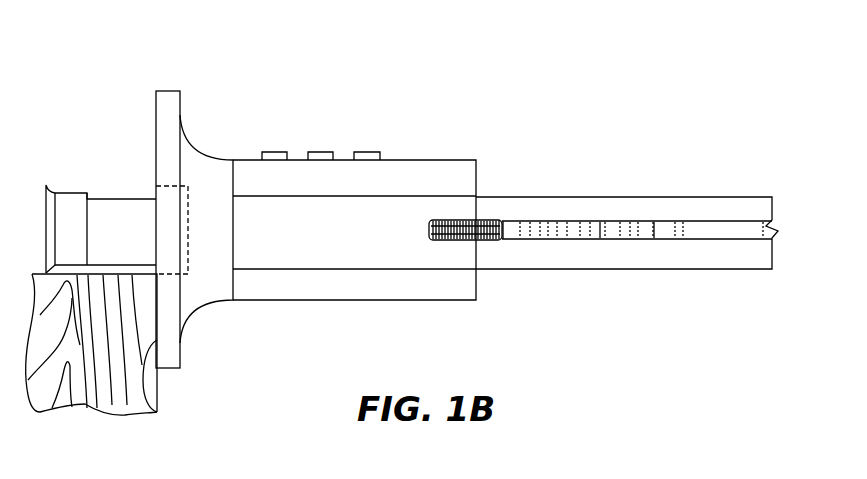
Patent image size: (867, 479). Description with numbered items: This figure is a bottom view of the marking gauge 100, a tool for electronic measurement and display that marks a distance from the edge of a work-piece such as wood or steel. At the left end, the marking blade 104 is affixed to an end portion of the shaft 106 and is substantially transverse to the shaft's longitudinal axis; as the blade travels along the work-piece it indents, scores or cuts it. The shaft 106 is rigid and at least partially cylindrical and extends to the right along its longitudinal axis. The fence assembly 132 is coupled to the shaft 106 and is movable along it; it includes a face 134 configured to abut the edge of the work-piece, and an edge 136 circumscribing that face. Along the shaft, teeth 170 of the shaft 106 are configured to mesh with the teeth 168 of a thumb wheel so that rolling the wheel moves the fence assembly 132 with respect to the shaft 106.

The marking gauge 100 is at (688, 46).
The marking blade 104 is at (71, 193).
The shaft 106 is at (703, 197).
The fence assembly 132 is at (197, 143).
The face 134 is at (157, 411).
The edge 136 is at (165, 90).
The teeth of the thumb wheel 168 is at (463, 222).
The teeth of the shaft 170 is at (606, 240).